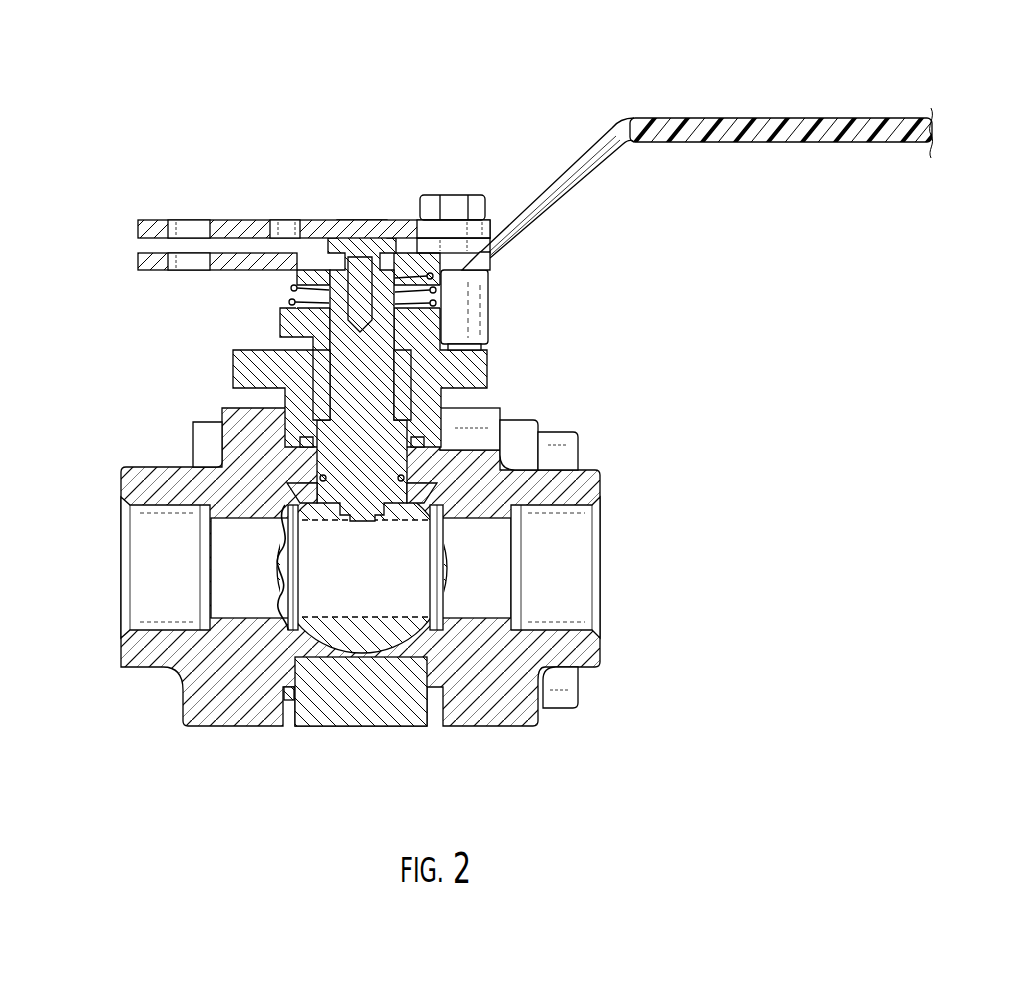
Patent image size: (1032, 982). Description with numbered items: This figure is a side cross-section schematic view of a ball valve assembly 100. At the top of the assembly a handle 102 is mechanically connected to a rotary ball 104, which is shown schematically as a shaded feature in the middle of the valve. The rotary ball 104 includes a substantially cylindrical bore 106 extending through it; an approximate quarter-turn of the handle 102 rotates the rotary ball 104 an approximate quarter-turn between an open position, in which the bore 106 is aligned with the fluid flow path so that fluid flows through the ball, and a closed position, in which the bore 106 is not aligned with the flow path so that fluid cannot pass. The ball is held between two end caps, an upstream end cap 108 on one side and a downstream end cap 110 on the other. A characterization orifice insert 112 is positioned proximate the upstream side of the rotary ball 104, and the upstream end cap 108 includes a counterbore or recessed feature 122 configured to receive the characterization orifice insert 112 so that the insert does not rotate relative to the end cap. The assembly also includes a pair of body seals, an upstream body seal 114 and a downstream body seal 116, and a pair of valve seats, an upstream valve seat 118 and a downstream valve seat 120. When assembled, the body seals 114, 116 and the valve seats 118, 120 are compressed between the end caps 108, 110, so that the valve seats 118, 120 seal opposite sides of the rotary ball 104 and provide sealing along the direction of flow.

The ball valve assembly 100 is at (483, 435).
The handle 102 is at (761, 93).
The rotary ball 104 is at (402, 661).
The bore 106 is at (365, 641).
The upstream end cap 108 is at (109, 650).
The downstream end cap 110 is at (630, 650).
The characterization orifice insert 112 is at (271, 617).
The upstream body seal 114 is at (283, 457).
The downstream body seal 116 is at (440, 453).
The upstream valve seat 118 is at (276, 478).
The downstream valve seat 120 is at (452, 483).
The counterbore feature 122 is at (271, 500).